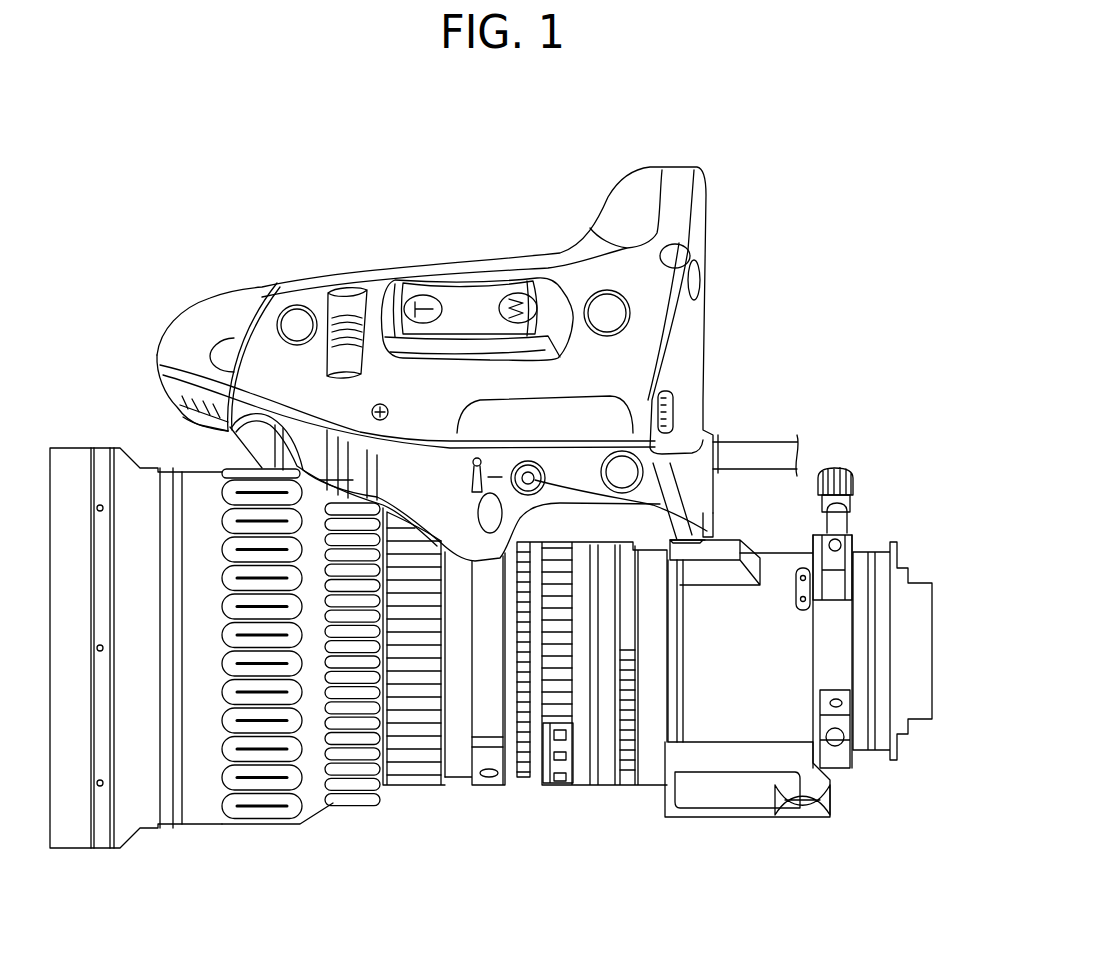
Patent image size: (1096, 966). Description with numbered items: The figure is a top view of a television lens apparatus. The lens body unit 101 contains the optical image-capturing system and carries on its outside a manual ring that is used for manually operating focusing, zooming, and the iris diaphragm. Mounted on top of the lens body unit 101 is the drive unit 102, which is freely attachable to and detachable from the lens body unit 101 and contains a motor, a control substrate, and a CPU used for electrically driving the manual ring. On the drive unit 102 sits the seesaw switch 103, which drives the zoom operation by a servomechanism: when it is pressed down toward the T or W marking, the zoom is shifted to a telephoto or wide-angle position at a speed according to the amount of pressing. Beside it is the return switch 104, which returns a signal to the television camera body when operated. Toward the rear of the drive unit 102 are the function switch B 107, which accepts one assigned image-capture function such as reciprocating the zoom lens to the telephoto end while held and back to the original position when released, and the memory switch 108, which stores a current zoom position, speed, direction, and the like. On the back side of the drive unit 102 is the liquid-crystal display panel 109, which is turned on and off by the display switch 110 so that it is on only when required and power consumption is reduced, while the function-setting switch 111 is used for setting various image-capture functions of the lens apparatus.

The lens body unit 101 is at (497, 787).
The drive unit 102 is at (222, 303).
The seesaw switch 103 is at (468, 302).
The return switch 104 is at (590, 300).
The function switch B 107 is at (640, 471).
The memory switch 108 is at (713, 519).
The liquid-crystal display panel 109 is at (690, 366).
The display switch 110 is at (672, 412).
The function-setting switch 111 is at (705, 263).